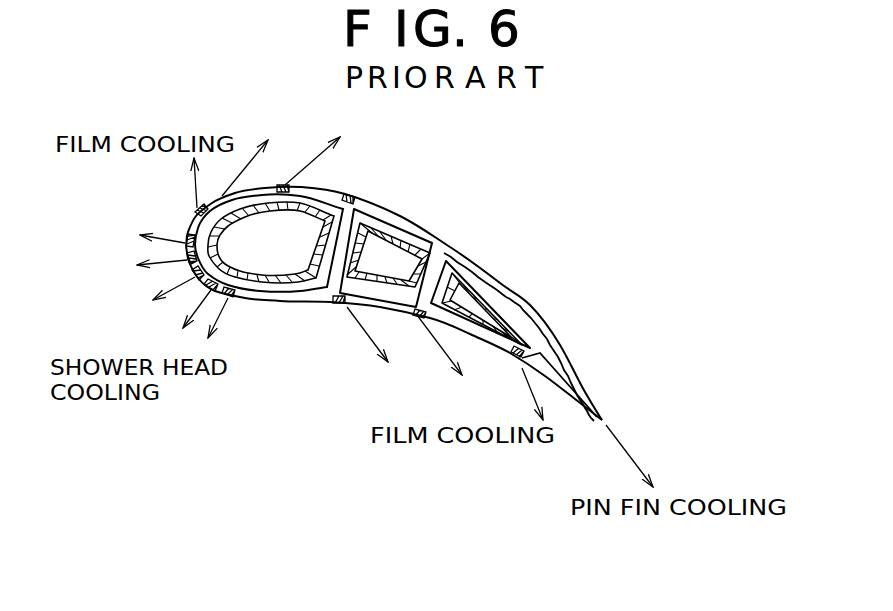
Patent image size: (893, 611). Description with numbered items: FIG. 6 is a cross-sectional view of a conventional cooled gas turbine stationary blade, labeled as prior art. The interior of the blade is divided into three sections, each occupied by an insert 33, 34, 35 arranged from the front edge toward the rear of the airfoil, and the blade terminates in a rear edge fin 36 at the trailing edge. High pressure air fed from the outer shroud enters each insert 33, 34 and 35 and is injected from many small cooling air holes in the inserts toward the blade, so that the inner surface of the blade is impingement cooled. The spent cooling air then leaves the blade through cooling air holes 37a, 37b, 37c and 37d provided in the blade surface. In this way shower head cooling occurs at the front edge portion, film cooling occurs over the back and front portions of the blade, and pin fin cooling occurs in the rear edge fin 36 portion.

The insert 33 is at (352, 210).
The insert 34 is at (395, 232).
The insert 35 is at (473, 288).
The rear edge fin 36 is at (567, 357).
The cooling air hole 37a is at (197, 210).
The cooling air hole 37b is at (282, 186).
The cooling air hole 37c is at (338, 303).
The cooling air hole 37d is at (478, 345).